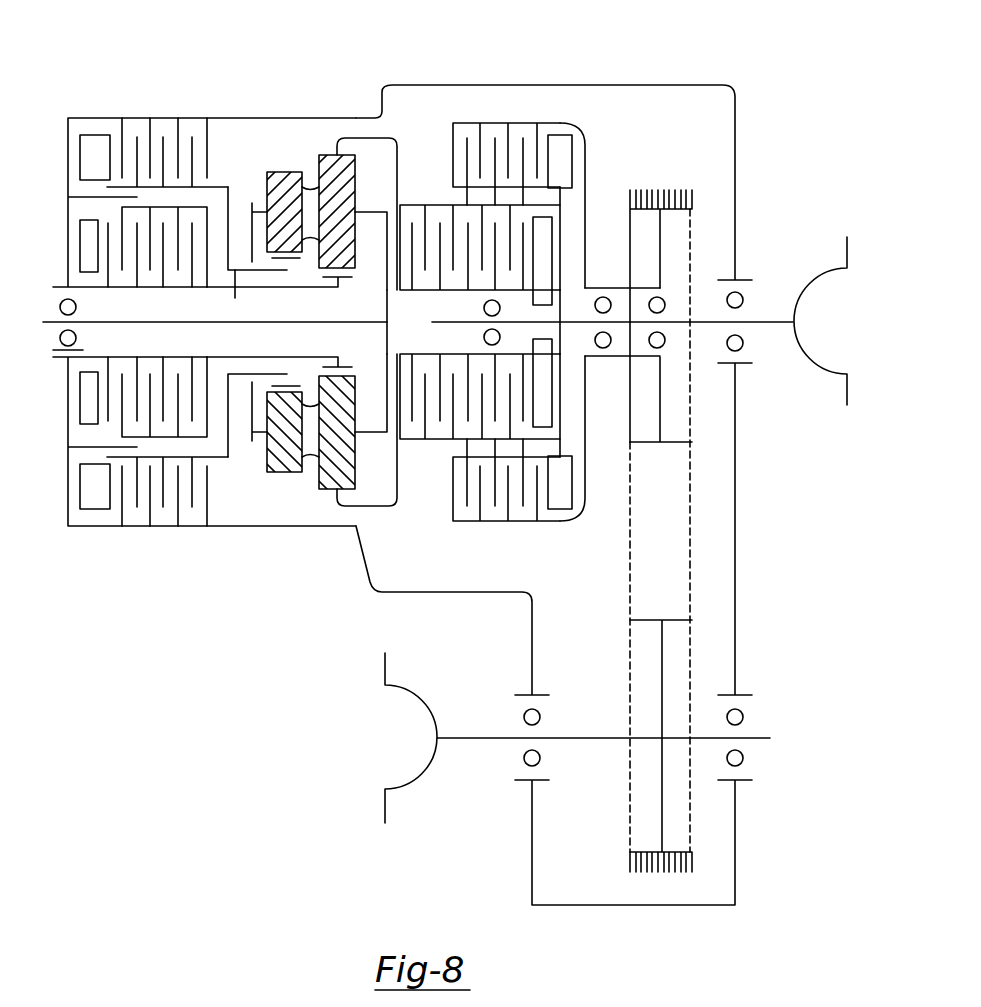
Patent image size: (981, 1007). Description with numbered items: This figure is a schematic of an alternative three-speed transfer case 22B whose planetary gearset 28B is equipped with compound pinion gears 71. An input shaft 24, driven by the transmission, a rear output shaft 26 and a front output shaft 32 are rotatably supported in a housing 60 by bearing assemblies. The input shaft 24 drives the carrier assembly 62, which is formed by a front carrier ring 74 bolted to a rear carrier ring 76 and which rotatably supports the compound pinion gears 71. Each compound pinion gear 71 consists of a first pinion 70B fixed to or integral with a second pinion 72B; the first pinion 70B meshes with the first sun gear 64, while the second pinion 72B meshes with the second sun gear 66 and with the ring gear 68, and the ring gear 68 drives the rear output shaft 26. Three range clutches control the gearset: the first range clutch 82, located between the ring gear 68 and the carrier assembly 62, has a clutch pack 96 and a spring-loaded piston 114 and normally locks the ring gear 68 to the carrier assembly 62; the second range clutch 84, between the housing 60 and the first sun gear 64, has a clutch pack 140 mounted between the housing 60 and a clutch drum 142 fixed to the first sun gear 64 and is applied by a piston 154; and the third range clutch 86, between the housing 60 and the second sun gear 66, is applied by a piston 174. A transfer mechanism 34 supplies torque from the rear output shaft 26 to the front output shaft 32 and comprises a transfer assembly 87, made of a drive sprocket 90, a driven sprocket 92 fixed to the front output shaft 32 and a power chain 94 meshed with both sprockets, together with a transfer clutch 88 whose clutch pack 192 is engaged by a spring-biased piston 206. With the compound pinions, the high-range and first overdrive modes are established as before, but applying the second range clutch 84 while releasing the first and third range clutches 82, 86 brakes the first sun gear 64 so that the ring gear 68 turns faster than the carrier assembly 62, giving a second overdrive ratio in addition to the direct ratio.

The transfer case 22B is at (594, 38).
The input shaft 24 is at (127, 322).
The rear output shaft 26 is at (760, 321).
The planetary gearset 28B is at (303, 140).
The front output shaft 32 is at (465, 738).
The transfer mechanism 34 is at (616, 152).
The housing 60 is at (738, 100).
The carrier assembly 62 is at (395, 372).
The first sun gear 64 is at (235, 298).
The second sun gear 66 is at (297, 287).
The ring gear 68 is at (356, 137).
The first pinion 70B is at (285, 180).
The compound pinion gears 71 is at (364, 205).
The second pinion 72B is at (336, 162).
The front carrier ring 74 is at (250, 392).
The rear carrier ring 76 is at (390, 418).
The first range clutch 82 is at (434, 190).
The second range clutch 84 is at (216, 141).
The third range clutch 86 is at (195, 290).
The transfer assembly 87 is at (712, 512).
The transfer clutch 88 is at (547, 111).
The drive sprocket 90 is at (660, 233).
The driven sprocket 92 is at (662, 665).
The power chain 94 is at (692, 563).
The clutch pack 96 is at (422, 250).
The piston 114 is at (545, 302).
The clutch pack 140 is at (156, 154).
The clutch drum 142 is at (229, 213).
The piston 154 is at (93, 143).
The piston 174 is at (83, 233).
The clutch pack 192 is at (496, 131).
The piston 206 is at (560, 143).